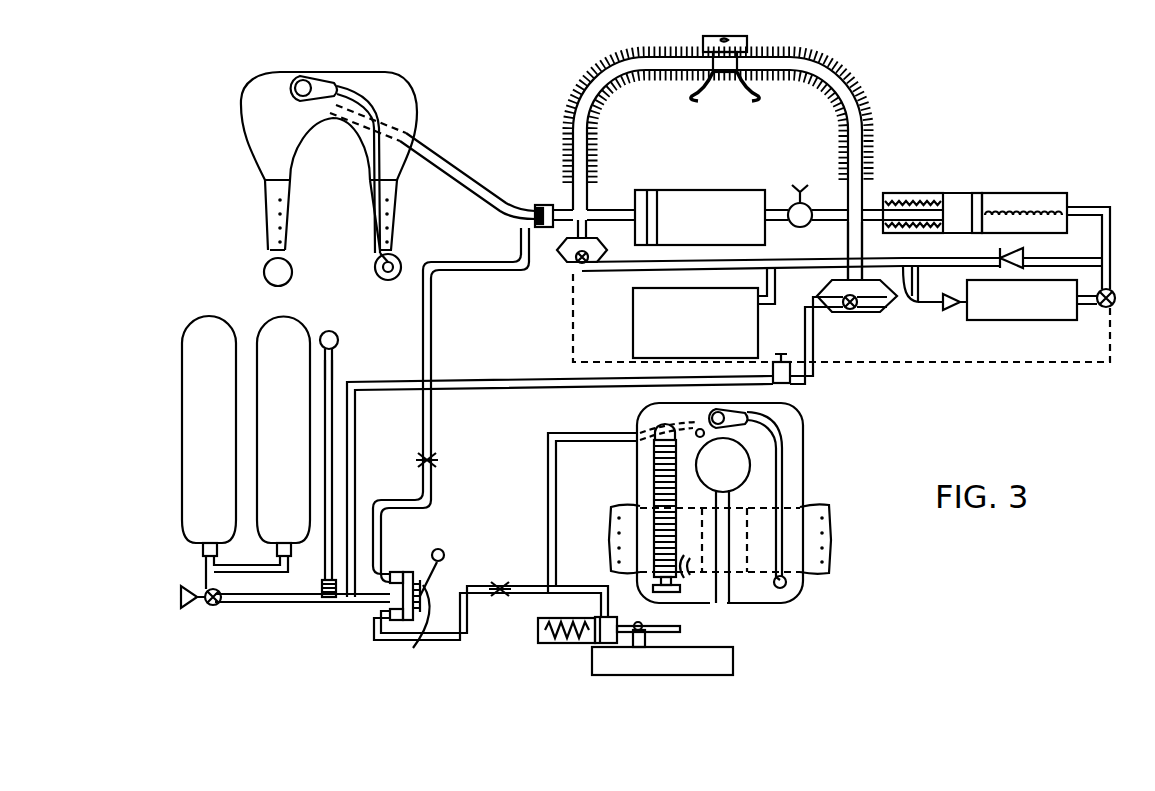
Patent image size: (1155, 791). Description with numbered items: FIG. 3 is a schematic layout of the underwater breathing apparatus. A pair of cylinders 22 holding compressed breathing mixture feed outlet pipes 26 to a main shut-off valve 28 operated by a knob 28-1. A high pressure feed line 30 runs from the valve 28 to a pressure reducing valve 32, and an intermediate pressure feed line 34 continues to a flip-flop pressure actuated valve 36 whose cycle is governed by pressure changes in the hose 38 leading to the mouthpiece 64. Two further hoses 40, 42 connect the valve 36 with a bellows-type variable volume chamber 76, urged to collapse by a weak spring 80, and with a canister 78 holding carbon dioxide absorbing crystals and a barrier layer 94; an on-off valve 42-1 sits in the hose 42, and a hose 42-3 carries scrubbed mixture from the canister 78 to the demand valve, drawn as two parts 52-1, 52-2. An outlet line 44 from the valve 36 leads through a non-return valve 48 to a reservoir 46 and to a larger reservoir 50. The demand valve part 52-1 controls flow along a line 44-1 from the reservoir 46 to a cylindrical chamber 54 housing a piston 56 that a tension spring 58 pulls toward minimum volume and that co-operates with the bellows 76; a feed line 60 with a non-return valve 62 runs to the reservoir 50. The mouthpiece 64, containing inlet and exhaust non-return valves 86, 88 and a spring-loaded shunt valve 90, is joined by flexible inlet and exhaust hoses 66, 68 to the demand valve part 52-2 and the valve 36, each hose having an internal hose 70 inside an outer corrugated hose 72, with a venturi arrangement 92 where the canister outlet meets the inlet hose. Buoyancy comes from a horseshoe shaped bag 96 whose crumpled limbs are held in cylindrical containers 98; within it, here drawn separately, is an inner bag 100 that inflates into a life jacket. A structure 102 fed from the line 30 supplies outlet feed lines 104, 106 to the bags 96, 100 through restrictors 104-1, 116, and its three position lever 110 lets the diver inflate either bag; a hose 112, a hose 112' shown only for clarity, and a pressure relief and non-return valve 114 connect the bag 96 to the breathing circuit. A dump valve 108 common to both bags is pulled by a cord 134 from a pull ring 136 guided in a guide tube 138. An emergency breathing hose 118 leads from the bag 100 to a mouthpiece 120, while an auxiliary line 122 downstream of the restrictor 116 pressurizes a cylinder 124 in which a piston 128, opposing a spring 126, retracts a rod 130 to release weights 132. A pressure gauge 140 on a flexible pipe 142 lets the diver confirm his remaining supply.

The cylinders 22 is at (275, 316).
The outlet pipes 26 is at (206, 574).
The main shut-off valve 28 is at (217, 605).
The knob 28-1 is at (184, 605).
The high pressure feed line 30 is at (508, 378).
The pressure reducing valve 32 is at (790, 385).
The intermediate pressure feed line 34 is at (812, 350).
The pressure actuated valve 36 is at (867, 312).
The hose 38 is at (865, 250).
The hose 40 is at (862, 226).
The hose 42 is at (802, 200).
The on-off valve 42-1 is at (790, 207).
The hose 42-3 is at (593, 268).
The outlet line 44 is at (908, 305).
The line 44-1 is at (1110, 258).
The reservoir 46 is at (1013, 318).
The non-return valve 48 is at (925, 298).
The larger reservoir 50 is at (633, 318).
The demand valve part 52-1 is at (1114, 306).
The demand valve part 52-2 is at (572, 257).
The chamber 54 is at (1040, 193).
The piston 56 is at (982, 200).
The tension spring 58 is at (1063, 205).
The feed line 60 is at (1108, 250).
The non-return valve 62 is at (1018, 250).
The mouthpiece 64 is at (752, 43).
The inlet hose 66 is at (560, 97).
The exhaust hose 68 is at (872, 92).
The internal hose 70 is at (564, 130).
The outer corrugated hose 72 is at (605, 58).
The variable volume chamber 76 is at (915, 193).
The canister 78 is at (710, 190).
The weak spring 80 is at (933, 215).
The non-return valve 86 is at (690, 97).
The non-return valve 88 is at (770, 100).
The shunt valve 90 is at (705, 42).
The venturi arrangement 92 is at (594, 212).
The barrier layer 94 is at (660, 200).
The horseshoe shaped bag 96 is at (241, 114).
The cylindrical containers 98 is at (265, 212).
The inner bag 100 is at (803, 445).
The structure 102 is at (452, 560).
The outlet feed line 104 is at (423, 325).
The restrictor 104-1 is at (438, 462).
The outlet feed line 106 is at (549, 520).
The dump valve 108 is at (312, 80).
The three position lever 110 is at (415, 648).
The hose 112 is at (531, 184).
The hose 112' is at (432, 162).
The pressure relief and non-return valve 114 is at (545, 207).
The restrictor 116 is at (498, 598).
The emergency breathing hose 118 is at (654, 462).
The mouthpiece 120 is at (676, 593).
The auxiliary line 122 is at (575, 586).
The cylinder 124 is at (558, 645).
The spring 126 is at (540, 632).
The piston 128 is at (607, 650).
The rod 130 is at (672, 632).
The weights 132 is at (734, 658).
The cord 134 is at (405, 262).
The pull ring 136 is at (378, 270).
The guide tube 138 is at (375, 140).
The pressure gauge 140 is at (329, 331).
The flexible pipe 142 is at (332, 372).